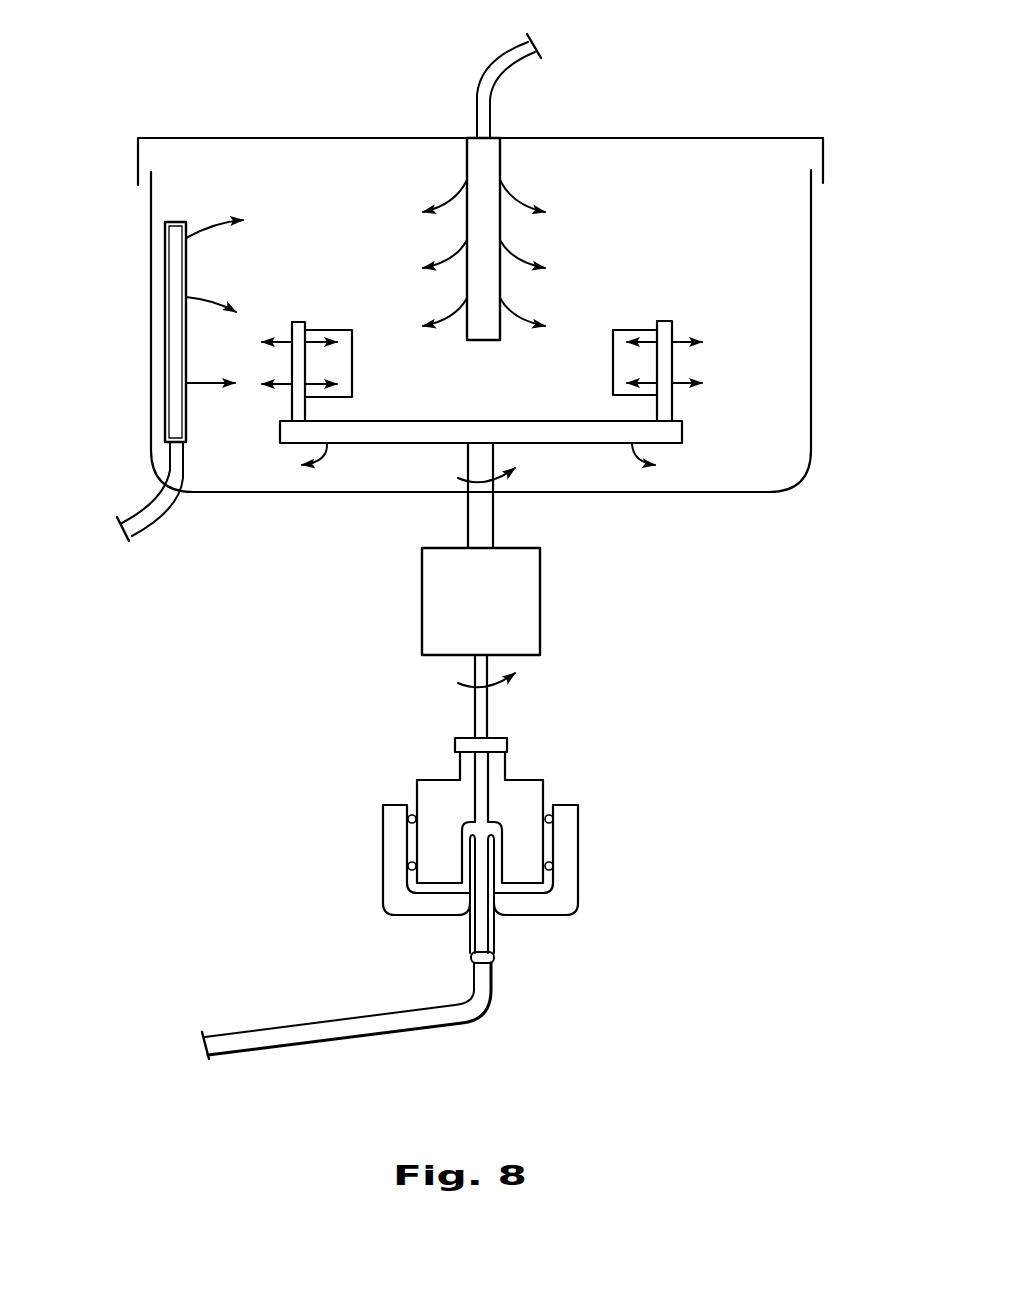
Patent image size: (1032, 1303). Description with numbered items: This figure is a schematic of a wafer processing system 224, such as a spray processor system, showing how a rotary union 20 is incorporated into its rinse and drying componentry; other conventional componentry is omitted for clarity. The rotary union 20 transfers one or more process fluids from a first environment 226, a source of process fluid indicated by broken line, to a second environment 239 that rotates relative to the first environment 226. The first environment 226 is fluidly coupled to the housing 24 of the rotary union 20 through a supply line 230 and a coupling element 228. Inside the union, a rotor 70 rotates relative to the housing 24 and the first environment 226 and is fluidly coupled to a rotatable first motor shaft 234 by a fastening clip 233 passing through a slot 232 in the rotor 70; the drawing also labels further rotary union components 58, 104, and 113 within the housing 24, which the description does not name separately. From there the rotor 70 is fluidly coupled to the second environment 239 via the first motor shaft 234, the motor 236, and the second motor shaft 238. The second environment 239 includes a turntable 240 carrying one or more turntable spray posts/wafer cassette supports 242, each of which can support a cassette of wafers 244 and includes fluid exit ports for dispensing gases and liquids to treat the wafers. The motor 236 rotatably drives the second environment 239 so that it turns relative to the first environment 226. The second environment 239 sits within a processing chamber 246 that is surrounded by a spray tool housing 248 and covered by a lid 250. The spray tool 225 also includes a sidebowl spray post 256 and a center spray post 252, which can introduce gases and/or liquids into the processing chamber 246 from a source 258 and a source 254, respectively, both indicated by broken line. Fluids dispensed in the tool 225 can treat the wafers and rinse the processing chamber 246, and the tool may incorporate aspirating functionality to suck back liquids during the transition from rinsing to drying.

The lid 250 is at (190, 137).
The spray tool 225 is at (752, 103).
The wafer processing system 224 is at (903, 144).
The processing chamber 246 is at (728, 240).
The center spray post 252 is at (490, 163).
The source 254 is at (545, 47).
The spray tool housing 248 is at (150, 213).
The sidebowl spray post 256 is at (178, 299).
The source 258 is at (124, 532).
The turntable spray post/wafer cassette support 242 is at (668, 325).
The cassette of wafers 244 is at (645, 360).
The second environment 239 is at (530, 385).
The turntable 240 is at (680, 440).
The second motor shaft 238 is at (487, 510).
The motor 236 is at (530, 603).
The first motor shaft 234 is at (487, 712).
The fastening clip 233 is at (505, 750).
The slot 232 is at (462, 755).
The rotor 70 is at (545, 800).
The housing cap 104 is at (553, 806).
The rotary union 20 is at (612, 808).
The housing 24 is at (578, 870).
The o-ring seal 113 is at (407, 865).
The electrode tube 58 is at (470, 870).
The coupling element 228 is at (494, 957).
The supply line 230 is at (400, 1022).
The first environment 226 is at (205, 1057).